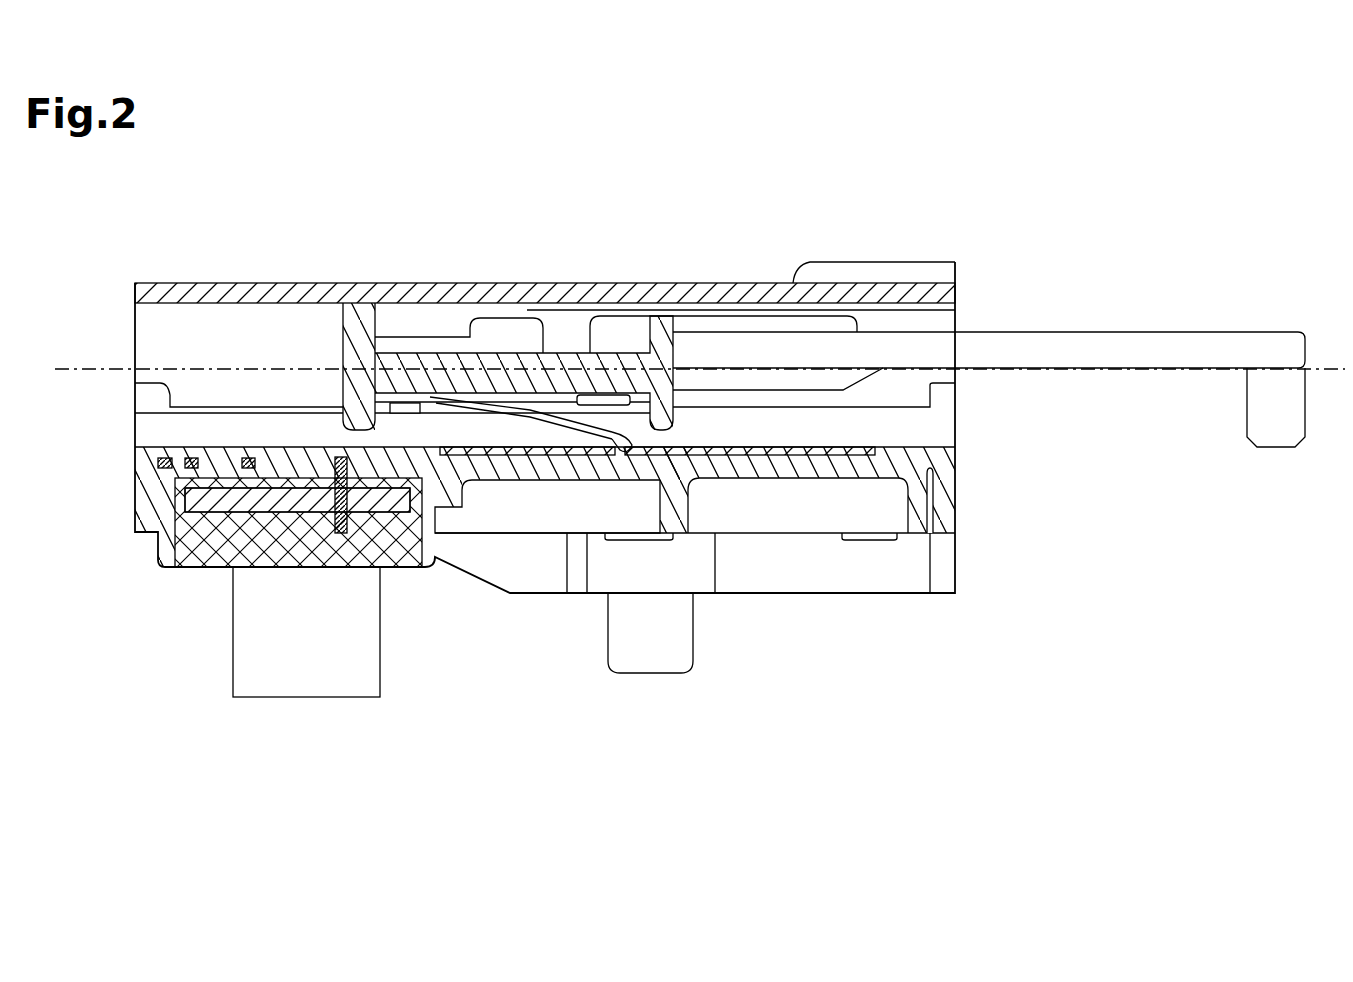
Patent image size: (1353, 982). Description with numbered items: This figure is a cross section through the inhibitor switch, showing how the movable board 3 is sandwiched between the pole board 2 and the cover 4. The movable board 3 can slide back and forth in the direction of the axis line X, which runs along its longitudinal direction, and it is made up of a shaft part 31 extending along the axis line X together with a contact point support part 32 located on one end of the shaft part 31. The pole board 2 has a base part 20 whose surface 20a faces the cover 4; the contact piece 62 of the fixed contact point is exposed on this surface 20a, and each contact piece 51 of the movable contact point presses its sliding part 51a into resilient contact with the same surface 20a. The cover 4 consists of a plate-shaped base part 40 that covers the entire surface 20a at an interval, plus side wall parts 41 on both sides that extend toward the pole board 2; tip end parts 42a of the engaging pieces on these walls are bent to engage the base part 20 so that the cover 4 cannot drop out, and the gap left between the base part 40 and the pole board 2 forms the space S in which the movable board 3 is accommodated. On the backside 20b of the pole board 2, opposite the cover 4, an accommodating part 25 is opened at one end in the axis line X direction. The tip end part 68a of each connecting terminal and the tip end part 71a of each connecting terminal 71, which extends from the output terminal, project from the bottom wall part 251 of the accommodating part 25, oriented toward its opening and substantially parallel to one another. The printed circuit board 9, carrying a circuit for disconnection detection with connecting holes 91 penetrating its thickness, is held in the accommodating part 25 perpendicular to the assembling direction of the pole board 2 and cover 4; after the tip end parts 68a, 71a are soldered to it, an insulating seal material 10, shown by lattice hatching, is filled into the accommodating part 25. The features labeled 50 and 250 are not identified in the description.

The pole board 2 is at (957, 593).
The movable board 3 is at (735, 205).
The cover 4 is at (1055, 245).
The printed circuit board 9 is at (175, 495).
The insulating seal material 10 is at (410, 568).
The base part 20 is at (945, 460).
The surface 20a is at (898, 445).
The backside 20b is at (922, 535).
The accommodating part 25 is at (160, 548).
The shaft part 31 is at (717, 337).
The contact point support part 32 is at (573, 350).
The base part 40 is at (957, 300).
The side wall parts 41 is at (948, 320).
The tip end part 42a is at (635, 555).
The pin 50 is at (418, 411).
The contact piece 51 is at (527, 415).
The sliding part 51a is at (616, 456).
The contact piece 62 is at (775, 478).
The tip end part 68a is at (340, 568).
The connecting terminal 71 is at (167, 447).
The tip end part 71a is at (218, 568).
The connecting hole 91 is at (322, 447).
The housing rib 250 is at (437, 544).
The bottom wall part 251 is at (247, 447).
The space S is at (206, 360).
The axis line X is at (686, 369).